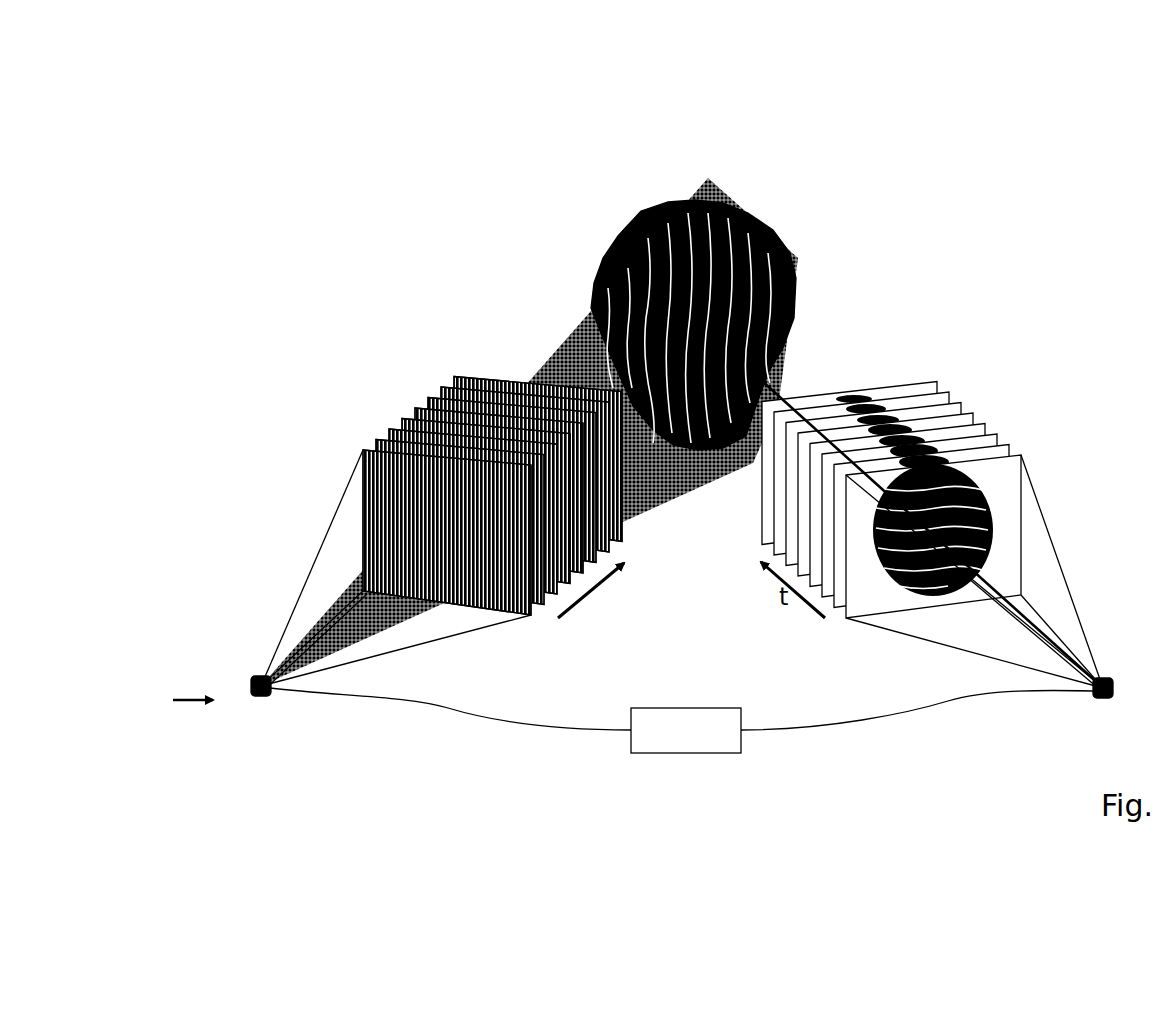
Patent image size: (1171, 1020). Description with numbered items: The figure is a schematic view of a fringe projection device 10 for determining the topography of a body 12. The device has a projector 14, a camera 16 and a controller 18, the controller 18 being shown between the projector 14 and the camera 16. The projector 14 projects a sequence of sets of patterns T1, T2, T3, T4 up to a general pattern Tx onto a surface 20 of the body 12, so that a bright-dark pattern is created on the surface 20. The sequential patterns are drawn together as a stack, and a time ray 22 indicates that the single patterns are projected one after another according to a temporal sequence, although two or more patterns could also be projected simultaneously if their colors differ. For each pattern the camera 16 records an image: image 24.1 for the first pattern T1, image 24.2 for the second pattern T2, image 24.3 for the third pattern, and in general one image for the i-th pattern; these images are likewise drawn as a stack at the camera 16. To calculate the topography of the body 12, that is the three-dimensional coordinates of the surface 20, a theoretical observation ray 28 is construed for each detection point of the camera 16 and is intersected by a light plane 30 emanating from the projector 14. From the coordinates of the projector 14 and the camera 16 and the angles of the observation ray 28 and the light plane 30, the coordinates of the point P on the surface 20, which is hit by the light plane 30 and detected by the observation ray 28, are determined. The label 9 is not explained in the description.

The fringe projection device 10 is at (177, 700).
The body 12 is at (783, 253).
The projector 14 is at (245, 670).
The camera 16 is at (1108, 668).
The controller 18 is at (681, 720).
The surface 20 is at (604, 240).
The time ray 22 is at (595, 570).
The image 24.1 is at (1013, 447).
The image 24.2 is at (1000, 437).
The image 24.3 is at (988, 426).
The observation ray 28 is at (753, 377).
The ray 9 is at (973, 511).
The light plane 30 is at (559, 343).
The point P is at (716, 198).
The first pattern T1 is at (353, 442).
The second pattern T2 is at (366, 431).
The third pattern T3 is at (380, 421).
The fourth pattern T4 is at (392, 410).
The x-th pattern Tx is at (443, 368).